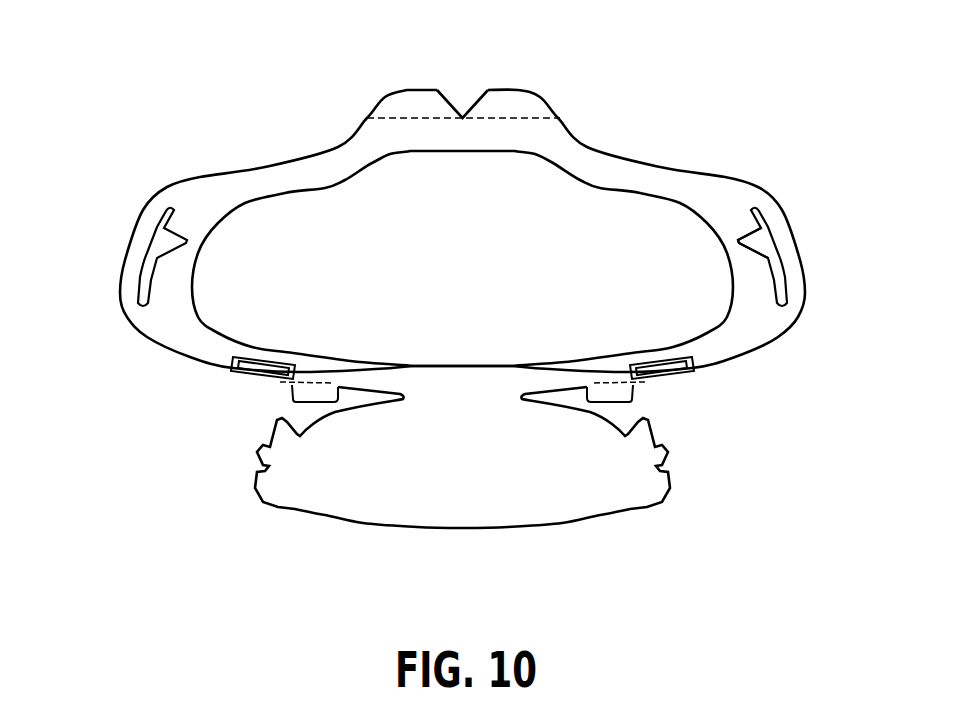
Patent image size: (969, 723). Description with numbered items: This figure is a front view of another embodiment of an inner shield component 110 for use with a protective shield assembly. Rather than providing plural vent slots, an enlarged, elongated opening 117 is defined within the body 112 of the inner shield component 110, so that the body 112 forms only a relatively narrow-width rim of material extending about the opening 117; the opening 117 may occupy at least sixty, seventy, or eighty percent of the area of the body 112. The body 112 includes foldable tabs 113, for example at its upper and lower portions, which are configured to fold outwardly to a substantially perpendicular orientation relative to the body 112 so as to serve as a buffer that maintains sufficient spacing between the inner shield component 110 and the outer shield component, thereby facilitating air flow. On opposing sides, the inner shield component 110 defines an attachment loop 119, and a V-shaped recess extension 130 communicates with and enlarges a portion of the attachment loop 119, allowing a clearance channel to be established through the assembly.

The inner shield component 110 is at (228, 88).
The body 112 is at (612, 175).
The foldable tabs 113 is at (505, 110).
The enlarged opening 117 is at (487, 255).
The attachment loop 119 is at (140, 270).
The V-shaped recess extension 130 is at (760, 238).